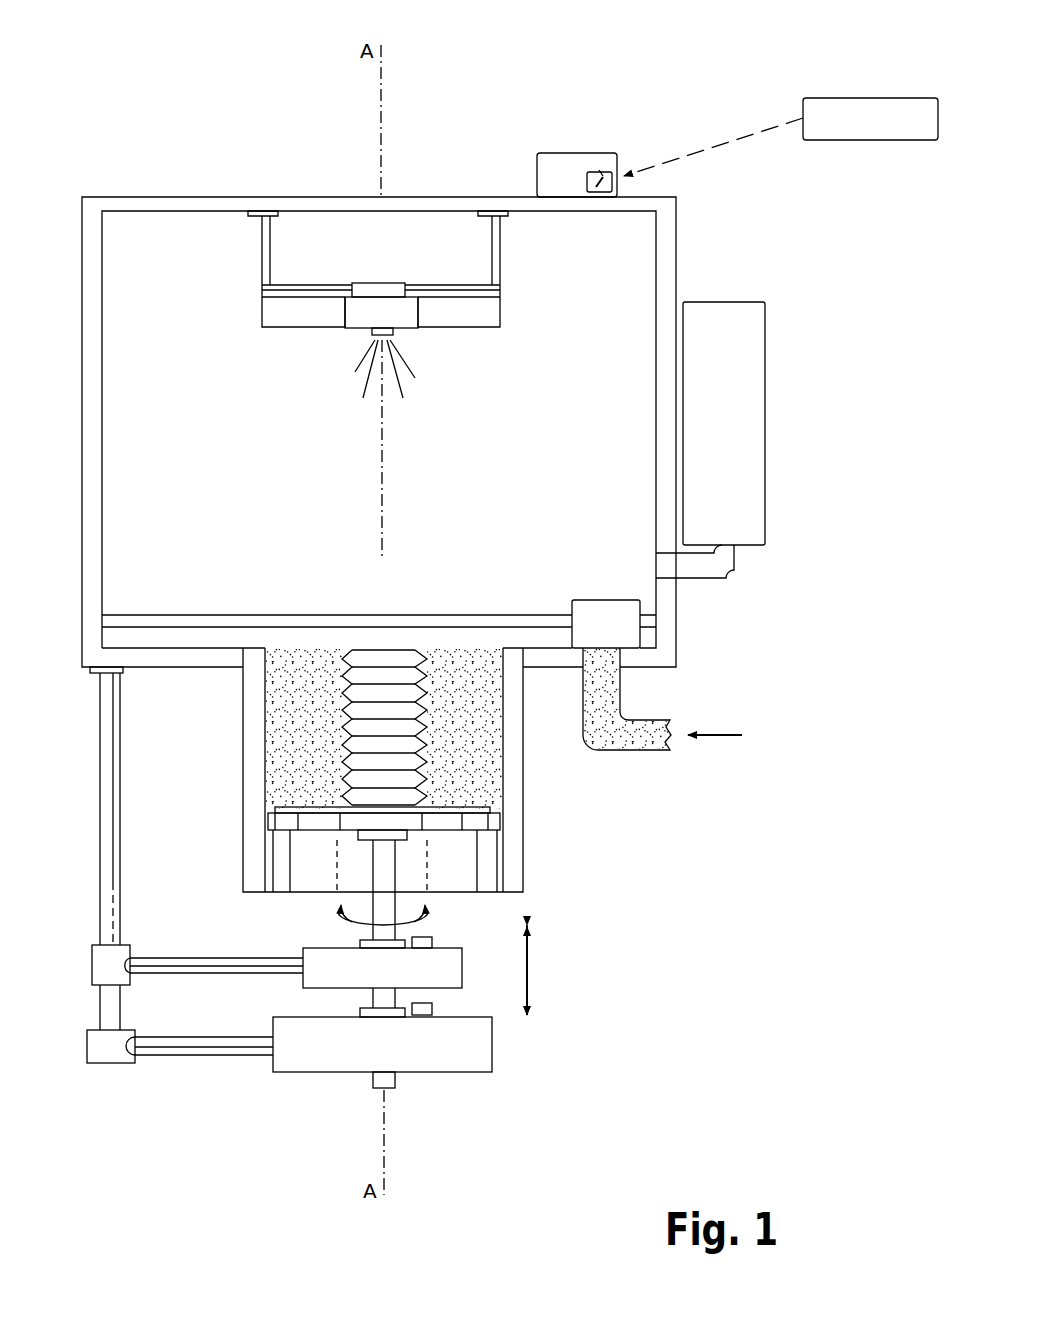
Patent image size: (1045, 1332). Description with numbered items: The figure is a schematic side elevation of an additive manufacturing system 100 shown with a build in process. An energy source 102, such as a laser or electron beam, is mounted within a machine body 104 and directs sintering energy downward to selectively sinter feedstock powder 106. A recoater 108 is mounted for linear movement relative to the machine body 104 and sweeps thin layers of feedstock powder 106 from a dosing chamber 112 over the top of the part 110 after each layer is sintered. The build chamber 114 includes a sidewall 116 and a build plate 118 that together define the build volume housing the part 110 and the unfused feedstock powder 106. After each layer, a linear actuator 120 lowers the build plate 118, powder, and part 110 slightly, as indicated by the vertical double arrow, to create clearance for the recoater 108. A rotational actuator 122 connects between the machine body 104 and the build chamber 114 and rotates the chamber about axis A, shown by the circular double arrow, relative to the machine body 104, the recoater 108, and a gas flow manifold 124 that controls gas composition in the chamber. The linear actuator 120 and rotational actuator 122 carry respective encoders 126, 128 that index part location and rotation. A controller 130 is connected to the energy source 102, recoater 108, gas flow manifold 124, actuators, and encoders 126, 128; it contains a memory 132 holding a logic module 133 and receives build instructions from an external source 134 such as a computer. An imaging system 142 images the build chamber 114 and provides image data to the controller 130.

The system 100 is at (148, 173).
The energy source 102 is at (343, 312).
The machine body 104 is at (78, 360).
The feedstock powder 106 is at (290, 680).
The recoater 108 is at (605, 605).
The part 110 is at (372, 665).
The dosing chamber 112 is at (640, 755).
The build chamber 114 is at (465, 675).
The sidewall 116 is at (252, 813).
The build plate 118 is at (313, 822).
The linear actuator 120 is at (285, 1062).
The rotational actuator 122 is at (310, 978).
The gas flow manifold 124 is at (755, 355).
The encoder 126 is at (433, 1008).
The encoder 128 is at (432, 940).
The controller 130 is at (567, 172).
The memory 132 is at (597, 178).
The logic module 133 is at (592, 192).
The external source 134 is at (870, 130).
The imaging system 142 is at (268, 312).